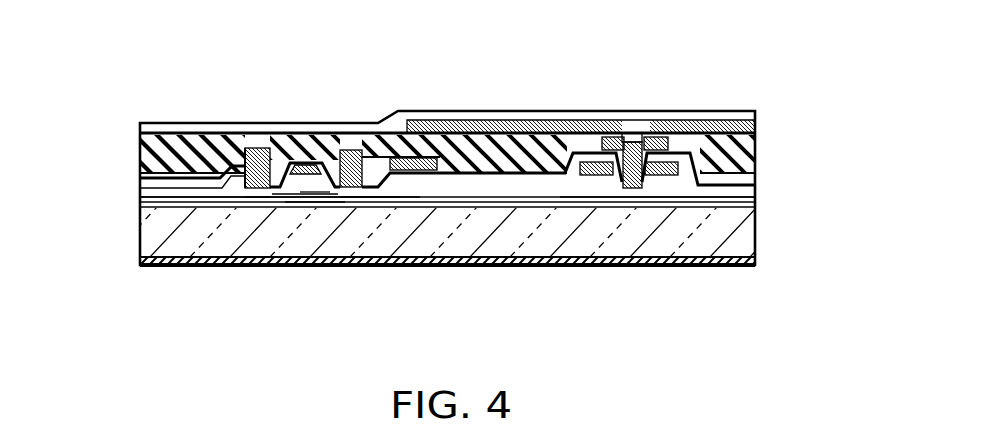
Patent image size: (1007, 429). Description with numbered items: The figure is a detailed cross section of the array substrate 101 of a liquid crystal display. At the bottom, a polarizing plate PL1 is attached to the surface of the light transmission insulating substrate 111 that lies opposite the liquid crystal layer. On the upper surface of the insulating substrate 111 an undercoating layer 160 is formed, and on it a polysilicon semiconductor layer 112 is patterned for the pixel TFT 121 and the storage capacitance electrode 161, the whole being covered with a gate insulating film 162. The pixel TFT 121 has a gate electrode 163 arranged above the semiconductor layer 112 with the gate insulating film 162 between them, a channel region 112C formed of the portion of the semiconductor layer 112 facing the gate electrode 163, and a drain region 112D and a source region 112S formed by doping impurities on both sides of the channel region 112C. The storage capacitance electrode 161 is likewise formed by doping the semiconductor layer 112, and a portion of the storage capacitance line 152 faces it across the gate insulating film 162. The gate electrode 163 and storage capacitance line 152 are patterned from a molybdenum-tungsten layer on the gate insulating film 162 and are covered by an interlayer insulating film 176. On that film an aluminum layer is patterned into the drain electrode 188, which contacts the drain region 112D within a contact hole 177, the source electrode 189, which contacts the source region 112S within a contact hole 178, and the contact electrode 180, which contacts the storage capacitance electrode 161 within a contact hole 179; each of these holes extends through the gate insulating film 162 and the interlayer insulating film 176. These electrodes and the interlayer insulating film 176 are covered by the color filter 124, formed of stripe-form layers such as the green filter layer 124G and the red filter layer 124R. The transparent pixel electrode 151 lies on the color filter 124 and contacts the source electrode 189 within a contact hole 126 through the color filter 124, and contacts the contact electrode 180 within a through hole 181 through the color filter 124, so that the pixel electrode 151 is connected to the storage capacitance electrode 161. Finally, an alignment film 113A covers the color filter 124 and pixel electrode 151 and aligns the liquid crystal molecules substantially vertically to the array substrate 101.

The array substrate 101 is at (776, 93).
The insulating substrate 111 is at (152, 233).
The polysilicon semiconductor layer 112 is at (245, 202).
The drain region 112D is at (266, 202).
The channel region 112C is at (362, 198).
The source region 112S is at (397, 192).
The alignment film 113A is at (523, 124).
The pixel TFT 121 is at (312, 210).
The color filter 124 is at (132, 139).
The green filter layer 124G is at (143, 157).
The red filter layer 124R is at (757, 152).
The contact hole 126 is at (455, 111).
The pixel electrode 151 is at (680, 134).
The storage capacitance line 152 is at (658, 178).
The undercoating layer 160 is at (757, 205).
The storage capacitance electrode 161 is at (666, 200).
The gate insulating film 162 is at (757, 188).
The gate electrode 163 is at (306, 160).
The interlayer insulating film 176 is at (142, 180).
The contact hole 177 is at (258, 148).
The contact hole 178 is at (351, 148).
The contact hole 179 is at (610, 137).
The contact electrode 180 is at (655, 133).
The through hole 181 is at (632, 142).
The drain electrode 188 is at (240, 140).
The source electrode 189 is at (400, 157).
The polarizing plate PL1 is at (637, 263).